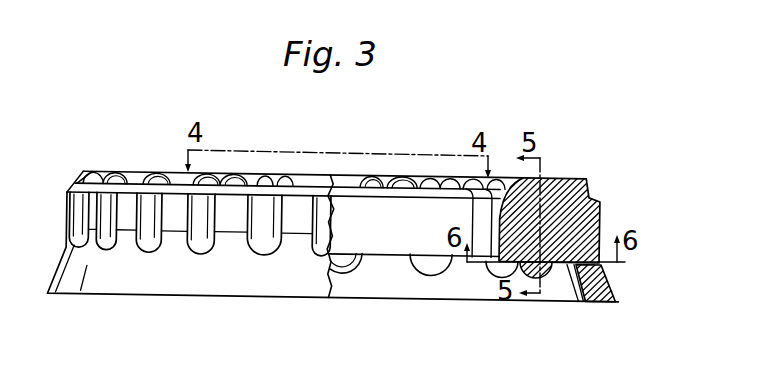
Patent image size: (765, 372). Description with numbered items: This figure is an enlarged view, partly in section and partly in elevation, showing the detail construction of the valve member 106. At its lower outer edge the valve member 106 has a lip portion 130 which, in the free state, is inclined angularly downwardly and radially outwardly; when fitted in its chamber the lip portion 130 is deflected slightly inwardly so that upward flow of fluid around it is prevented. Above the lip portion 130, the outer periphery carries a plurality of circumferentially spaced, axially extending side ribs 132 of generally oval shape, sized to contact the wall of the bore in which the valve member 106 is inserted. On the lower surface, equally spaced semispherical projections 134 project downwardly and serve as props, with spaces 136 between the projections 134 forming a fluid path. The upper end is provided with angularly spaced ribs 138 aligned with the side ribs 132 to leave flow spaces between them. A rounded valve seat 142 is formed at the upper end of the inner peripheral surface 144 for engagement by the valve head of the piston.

The valve member 106 is at (421, 146).
The lip portion 130 is at (560, 295).
The side ribs 132 is at (256, 254).
The semispherical projections 134 is at (493, 273).
The spaces 136 is at (377, 260).
The ribs 138 is at (362, 173).
The rounded valve seat 142 is at (503, 178).
The inner peripheral surface 144 is at (478, 197).